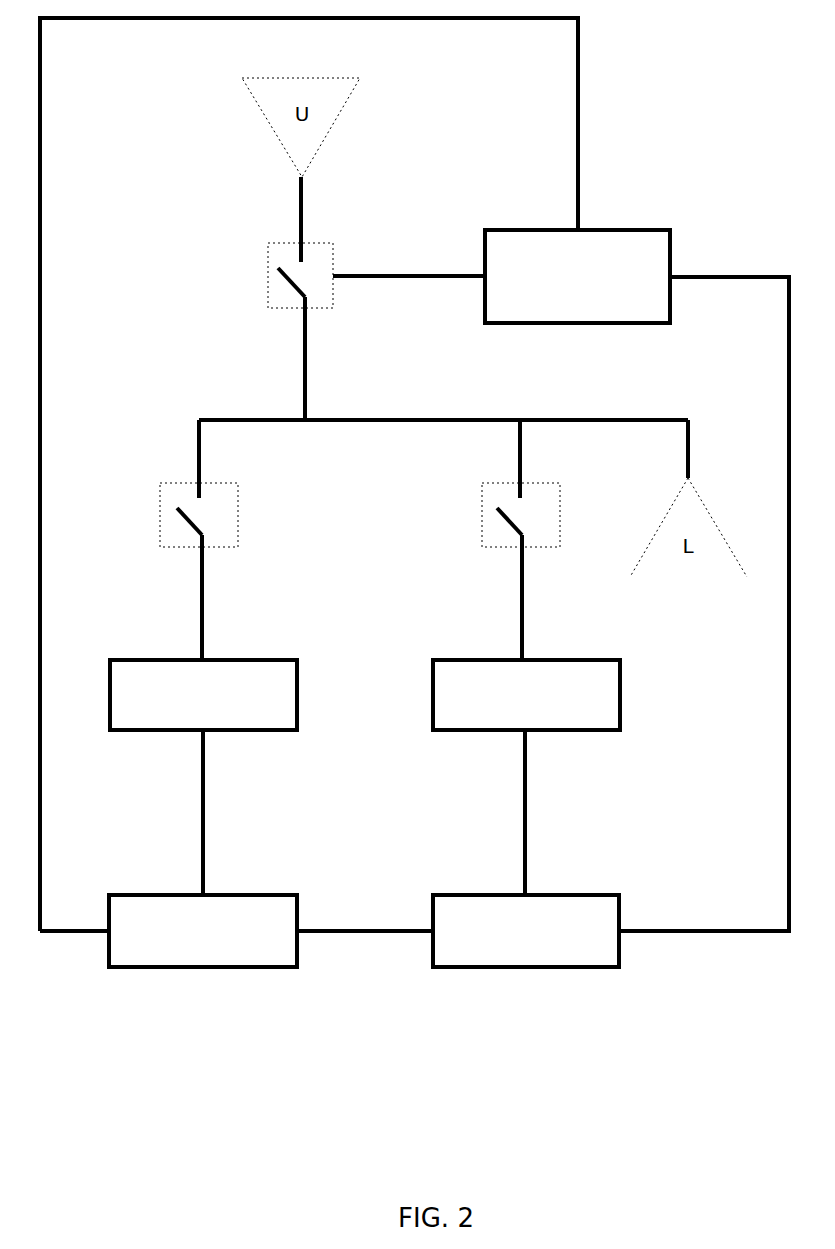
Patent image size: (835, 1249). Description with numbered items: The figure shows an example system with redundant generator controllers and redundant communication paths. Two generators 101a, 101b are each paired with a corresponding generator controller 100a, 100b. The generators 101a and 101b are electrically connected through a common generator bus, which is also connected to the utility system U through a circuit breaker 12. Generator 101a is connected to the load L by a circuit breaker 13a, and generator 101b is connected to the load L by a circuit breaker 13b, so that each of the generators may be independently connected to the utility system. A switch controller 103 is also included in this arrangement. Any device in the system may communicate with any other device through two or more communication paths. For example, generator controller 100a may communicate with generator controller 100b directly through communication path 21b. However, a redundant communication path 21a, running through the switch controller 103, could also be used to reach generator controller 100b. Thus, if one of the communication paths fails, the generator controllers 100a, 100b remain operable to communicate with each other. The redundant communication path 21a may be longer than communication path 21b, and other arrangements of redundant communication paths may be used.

The circuit breaker 12 is at (338, 271).
The switch controller 103 is at (598, 229).
The circuit breaker 13a is at (237, 496).
The circuit breaker 13b is at (557, 496).
The generator 101a is at (222, 660).
The generator 101b is at (545, 660).
The generator controller 100a is at (222, 896).
The generator controller 100b is at (546, 896).
The redundant communication path 21a is at (38, 928).
The communication path 21b is at (326, 929).